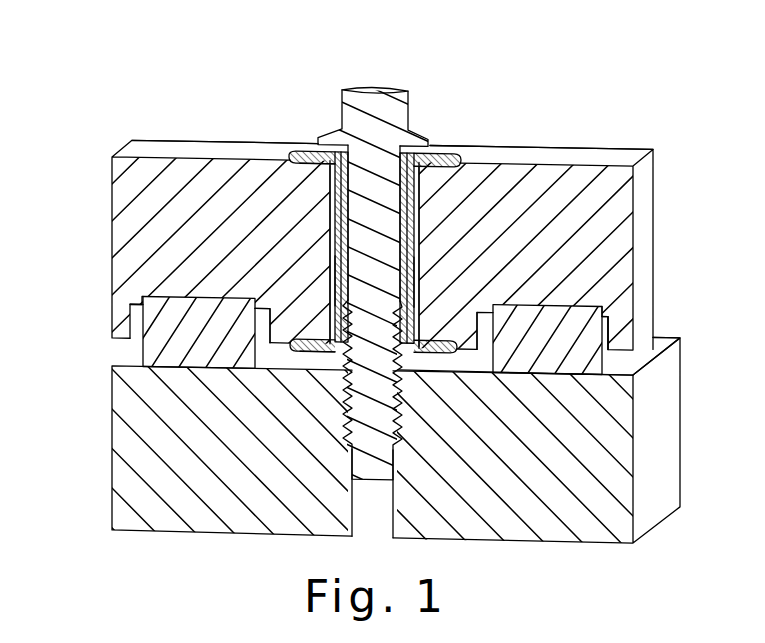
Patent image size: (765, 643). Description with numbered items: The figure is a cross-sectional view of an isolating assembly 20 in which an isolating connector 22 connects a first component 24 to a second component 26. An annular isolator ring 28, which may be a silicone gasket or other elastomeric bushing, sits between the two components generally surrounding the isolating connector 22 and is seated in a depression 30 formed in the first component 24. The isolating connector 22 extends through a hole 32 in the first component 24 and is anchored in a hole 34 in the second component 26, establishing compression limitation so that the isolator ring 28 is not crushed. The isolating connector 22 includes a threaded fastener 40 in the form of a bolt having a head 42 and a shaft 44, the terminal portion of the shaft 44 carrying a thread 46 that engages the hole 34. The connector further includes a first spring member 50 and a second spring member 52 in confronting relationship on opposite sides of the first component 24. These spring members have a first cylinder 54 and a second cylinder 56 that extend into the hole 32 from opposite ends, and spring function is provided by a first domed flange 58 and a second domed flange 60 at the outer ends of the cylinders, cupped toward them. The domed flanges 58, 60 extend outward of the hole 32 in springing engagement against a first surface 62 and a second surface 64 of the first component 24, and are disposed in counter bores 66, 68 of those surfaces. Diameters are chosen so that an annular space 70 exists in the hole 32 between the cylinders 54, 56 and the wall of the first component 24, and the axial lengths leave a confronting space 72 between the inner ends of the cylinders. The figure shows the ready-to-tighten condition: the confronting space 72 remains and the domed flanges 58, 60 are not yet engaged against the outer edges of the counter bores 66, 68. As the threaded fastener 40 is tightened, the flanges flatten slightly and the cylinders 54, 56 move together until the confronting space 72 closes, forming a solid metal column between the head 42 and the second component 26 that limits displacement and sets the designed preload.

The isolating assembly 20 is at (233, 88).
The isolating connector 22 is at (439, 103).
The first component 24 is at (123, 185).
The second component 26 is at (125, 485).
The isolator ring 28 is at (163, 339).
The depression 30 is at (128, 323).
The hole 32 is at (427, 188).
The hole 34 is at (360, 521).
The threaded fastener 40 is at (375, 80).
The head 42 is at (350, 106).
The shaft 44 is at (387, 215).
The thread 46 is at (345, 357).
The first spring member 50 is at (298, 142).
The second spring member 52 is at (441, 363).
The first cylinder 54 is at (333, 211).
The second cylinder 56 is at (338, 261).
The first domed flange 58 is at (437, 140).
The second domed flange 60 is at (320, 348).
The first surface 62 is at (600, 148).
The second surface 64 is at (642, 359).
The counter bore 66 is at (317, 162).
The counter bore 68 is at (322, 335).
The annular space 70 is at (414, 276).
The confronting space 72 is at (409, 245).